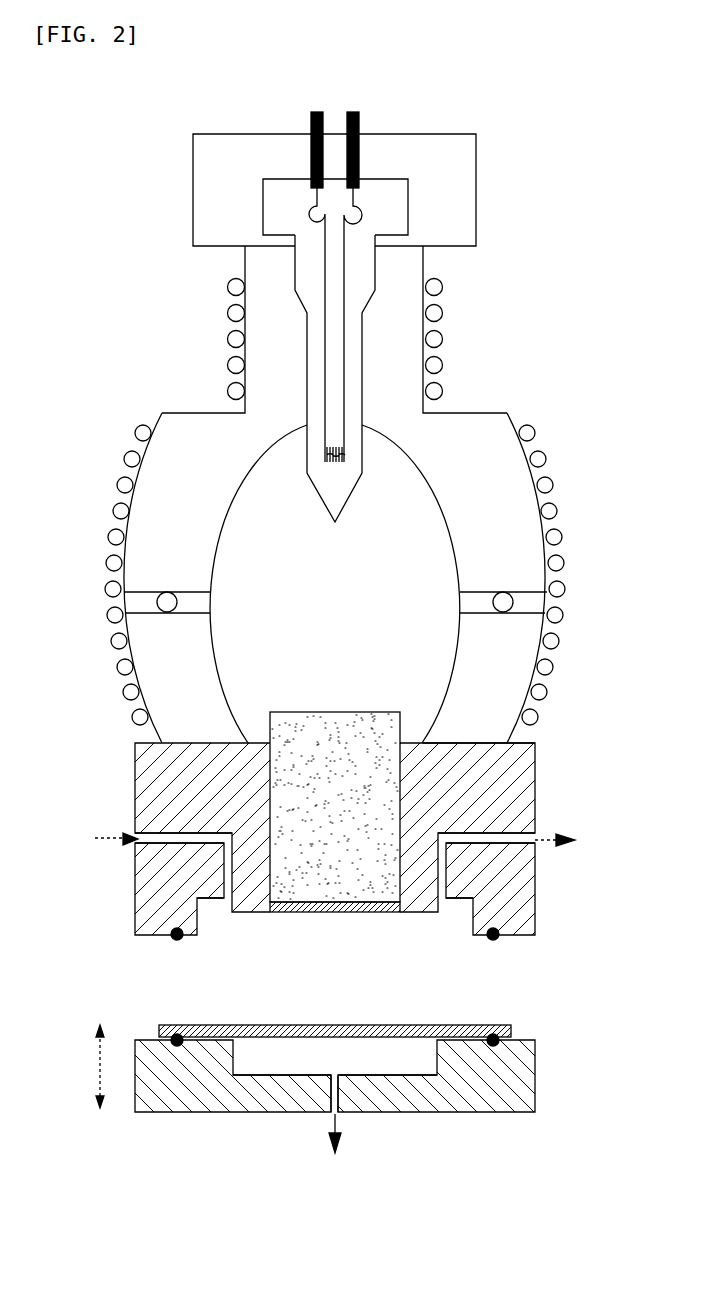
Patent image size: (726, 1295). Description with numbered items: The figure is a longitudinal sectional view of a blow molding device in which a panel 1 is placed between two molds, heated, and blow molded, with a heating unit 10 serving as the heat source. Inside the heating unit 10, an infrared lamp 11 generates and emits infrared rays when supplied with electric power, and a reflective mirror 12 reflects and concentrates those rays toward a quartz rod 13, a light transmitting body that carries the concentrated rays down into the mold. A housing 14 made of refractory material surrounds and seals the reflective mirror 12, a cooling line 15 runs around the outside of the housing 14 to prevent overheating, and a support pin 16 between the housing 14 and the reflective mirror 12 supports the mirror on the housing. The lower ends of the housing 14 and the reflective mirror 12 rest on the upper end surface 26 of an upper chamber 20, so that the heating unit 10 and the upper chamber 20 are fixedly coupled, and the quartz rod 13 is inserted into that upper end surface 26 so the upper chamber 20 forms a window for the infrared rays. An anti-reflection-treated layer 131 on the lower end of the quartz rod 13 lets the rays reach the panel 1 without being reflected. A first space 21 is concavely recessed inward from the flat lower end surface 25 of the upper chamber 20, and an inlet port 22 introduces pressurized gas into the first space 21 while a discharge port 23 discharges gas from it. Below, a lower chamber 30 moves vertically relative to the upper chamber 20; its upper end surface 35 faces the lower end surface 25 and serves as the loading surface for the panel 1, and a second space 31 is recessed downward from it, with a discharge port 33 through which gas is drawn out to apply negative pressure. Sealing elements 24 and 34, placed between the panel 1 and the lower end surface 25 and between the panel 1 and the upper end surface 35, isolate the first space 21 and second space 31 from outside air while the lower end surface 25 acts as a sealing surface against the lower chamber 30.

The panel 1 is at (347, 1025).
The heating unit 10 is at (495, 321).
The infrared lamp 11 is at (357, 502).
The reflective mirror 12 is at (436, 514).
The quartz rod 13 is at (333, 718).
The anti-reflection-treated layer 131 is at (313, 913).
The housing 14 is at (531, 473).
The cooling line 15 is at (135, 433).
The support pin 16 is at (521, 594).
The upper chamber 20 is at (553, 779).
The first space 21 is at (413, 921).
The inlet port 22 is at (163, 838).
The discharge port 23 is at (507, 837).
The sealing element 24 is at (176, 941).
The lower end surface 25 is at (515, 937).
The upper end surface 26 is at (488, 743).
The lower chamber 30 is at (553, 1091).
The second space 31 is at (413, 1063).
The discharge port 33 is at (340, 1093).
The sealing element 34 is at (177, 1046).
The upper end surface 35 is at (520, 1040).